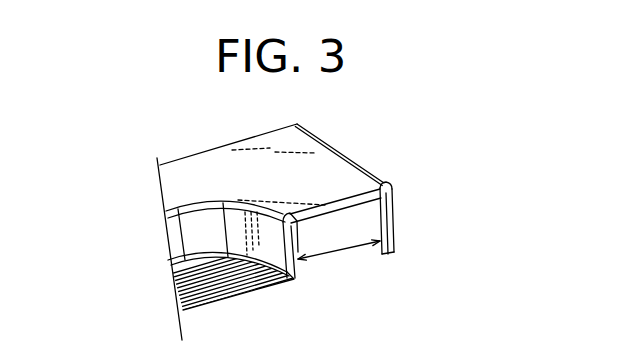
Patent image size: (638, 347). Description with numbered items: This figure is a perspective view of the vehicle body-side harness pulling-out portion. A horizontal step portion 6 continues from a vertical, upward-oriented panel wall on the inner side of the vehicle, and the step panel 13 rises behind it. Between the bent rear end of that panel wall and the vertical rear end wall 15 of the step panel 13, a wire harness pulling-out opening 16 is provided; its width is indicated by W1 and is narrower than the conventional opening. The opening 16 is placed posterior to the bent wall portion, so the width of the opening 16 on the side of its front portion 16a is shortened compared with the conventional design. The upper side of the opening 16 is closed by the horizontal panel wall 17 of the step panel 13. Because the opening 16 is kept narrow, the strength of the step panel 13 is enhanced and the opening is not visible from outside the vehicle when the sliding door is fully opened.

The step portion 6 is at (212, 288).
The step panel 13 is at (330, 138).
The vertical rear end wall 15 is at (394, 222).
The wire harness pulling-out opening 16 is at (343, 232).
The front portion 16a is at (299, 243).
The horizontal panel wall 17 is at (337, 172).
The width of opening W1 is at (352, 247).